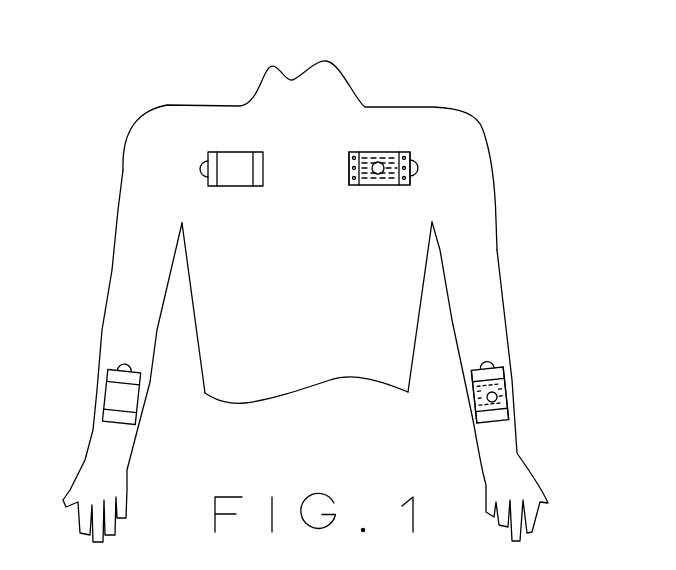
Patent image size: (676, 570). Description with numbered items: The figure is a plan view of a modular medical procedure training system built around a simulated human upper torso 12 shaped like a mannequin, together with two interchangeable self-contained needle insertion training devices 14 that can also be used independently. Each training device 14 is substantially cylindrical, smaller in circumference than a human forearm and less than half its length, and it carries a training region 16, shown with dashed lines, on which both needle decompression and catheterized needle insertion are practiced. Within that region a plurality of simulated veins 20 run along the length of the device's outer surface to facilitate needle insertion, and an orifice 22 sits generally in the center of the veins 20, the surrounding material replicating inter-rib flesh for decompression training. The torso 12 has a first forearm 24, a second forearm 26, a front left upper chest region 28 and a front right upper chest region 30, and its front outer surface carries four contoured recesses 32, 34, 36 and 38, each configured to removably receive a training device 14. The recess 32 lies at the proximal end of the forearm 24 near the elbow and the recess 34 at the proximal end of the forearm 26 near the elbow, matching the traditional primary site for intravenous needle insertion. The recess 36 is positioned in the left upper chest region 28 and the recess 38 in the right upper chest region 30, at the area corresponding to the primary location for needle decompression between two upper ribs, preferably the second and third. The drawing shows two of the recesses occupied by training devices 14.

The simulated human upper torso 12 is at (468, 172).
The self-contained needle insertion training device 14 is at (407, 152).
The training region 16 is at (355, 153).
The simulated veins 20 is at (372, 175).
The orifice 22 is at (380, 162).
The first forearm 24 is at (502, 442).
The second forearm 26 is at (110, 465).
The front left upper chest region 28 is at (385, 208).
The front right upper chest region 30 is at (237, 203).
The contoured recess 32 is at (503, 400).
The contoured recess 34 is at (102, 397).
The contoured recess 36 is at (392, 187).
The contoured recess 38 is at (235, 150).